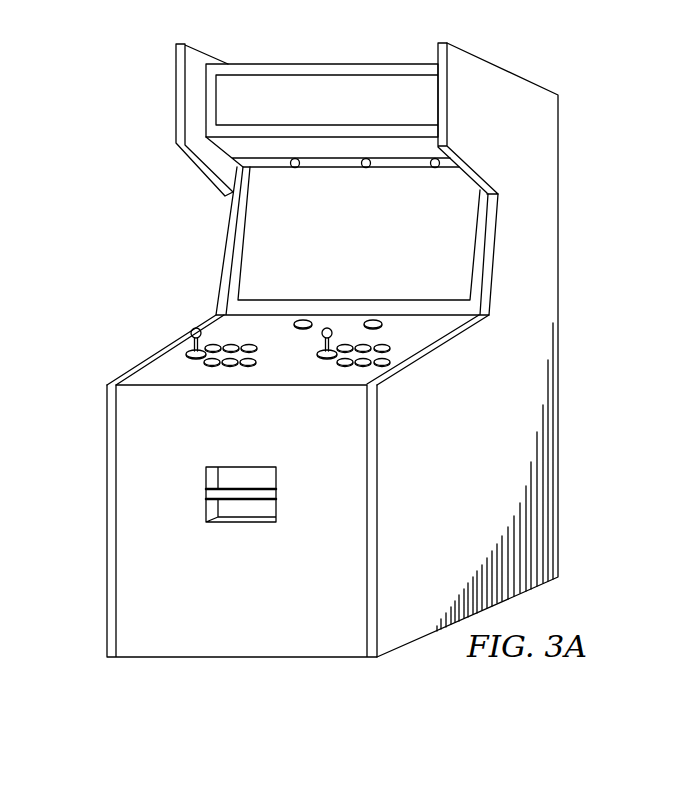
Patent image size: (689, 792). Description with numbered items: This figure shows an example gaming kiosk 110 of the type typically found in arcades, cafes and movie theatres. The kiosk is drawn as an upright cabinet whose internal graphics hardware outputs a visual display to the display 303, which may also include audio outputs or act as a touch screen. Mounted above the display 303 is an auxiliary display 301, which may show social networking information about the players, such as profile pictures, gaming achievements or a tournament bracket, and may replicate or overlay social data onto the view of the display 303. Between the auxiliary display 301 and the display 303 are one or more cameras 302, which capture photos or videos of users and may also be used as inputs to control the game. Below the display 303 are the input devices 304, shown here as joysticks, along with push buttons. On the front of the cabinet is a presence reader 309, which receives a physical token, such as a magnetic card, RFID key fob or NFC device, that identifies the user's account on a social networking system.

The gaming kiosk 110 is at (106, 522).
The auxiliary display 301 is at (350, 84).
The cameras 302 is at (294, 168).
The display 303 is at (257, 235).
The input devices 304 is at (196, 328).
The presence reader 309 is at (241, 478).